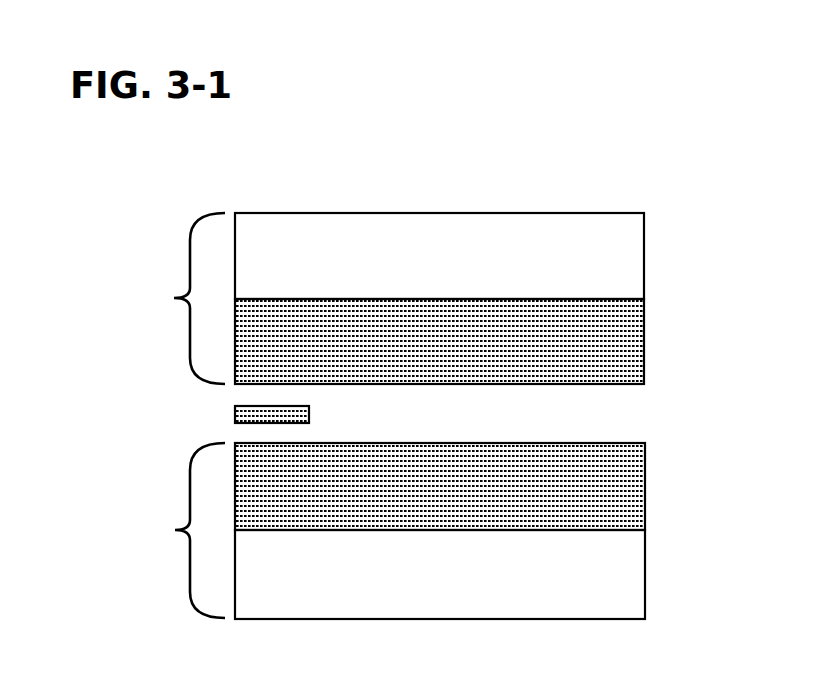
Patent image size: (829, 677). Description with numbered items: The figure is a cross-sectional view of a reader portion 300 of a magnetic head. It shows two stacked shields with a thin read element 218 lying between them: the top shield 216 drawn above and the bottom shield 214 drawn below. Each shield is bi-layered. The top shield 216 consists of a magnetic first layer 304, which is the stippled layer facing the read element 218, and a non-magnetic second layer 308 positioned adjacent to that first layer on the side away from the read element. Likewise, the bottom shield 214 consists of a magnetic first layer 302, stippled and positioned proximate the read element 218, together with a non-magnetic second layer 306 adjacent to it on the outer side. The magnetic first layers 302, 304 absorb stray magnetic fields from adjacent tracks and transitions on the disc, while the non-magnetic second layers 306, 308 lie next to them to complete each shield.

The reader portion 300 is at (556, 141).
The top shield 216 is at (172, 298).
The bottom shield 214 is at (173, 530).
The read element 218 is at (235, 414).
The second layer 308 is at (645, 252).
The first layer 304 is at (645, 342).
The first layer 302 is at (645, 487).
The second layer 306 is at (645, 573).